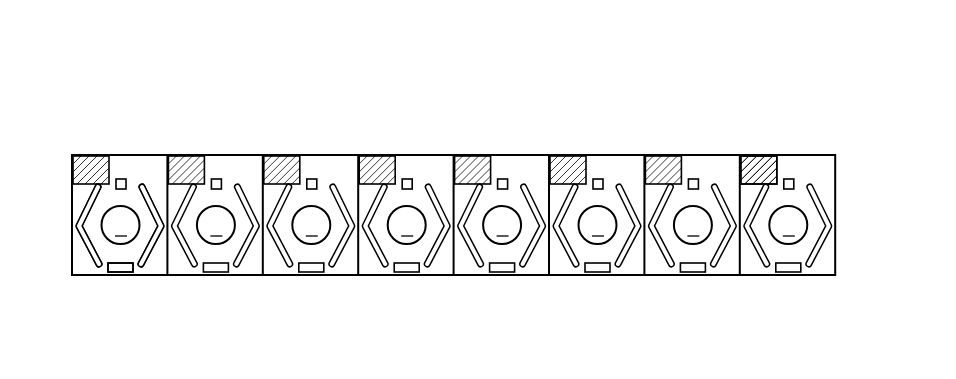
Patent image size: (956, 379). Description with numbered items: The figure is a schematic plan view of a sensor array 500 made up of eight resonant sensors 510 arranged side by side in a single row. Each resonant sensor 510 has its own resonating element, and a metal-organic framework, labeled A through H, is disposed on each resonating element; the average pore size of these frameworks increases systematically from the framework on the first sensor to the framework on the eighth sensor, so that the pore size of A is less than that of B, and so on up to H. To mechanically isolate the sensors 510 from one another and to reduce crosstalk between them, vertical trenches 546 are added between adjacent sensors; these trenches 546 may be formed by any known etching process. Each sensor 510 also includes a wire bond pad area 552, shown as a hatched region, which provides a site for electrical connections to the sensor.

The sensor array 500 is at (184, 96).
The resonant sensor 510 is at (140, 155).
The wire bond pad area 552 is at (752, 165).
The vertical trench 546 is at (100, 265).